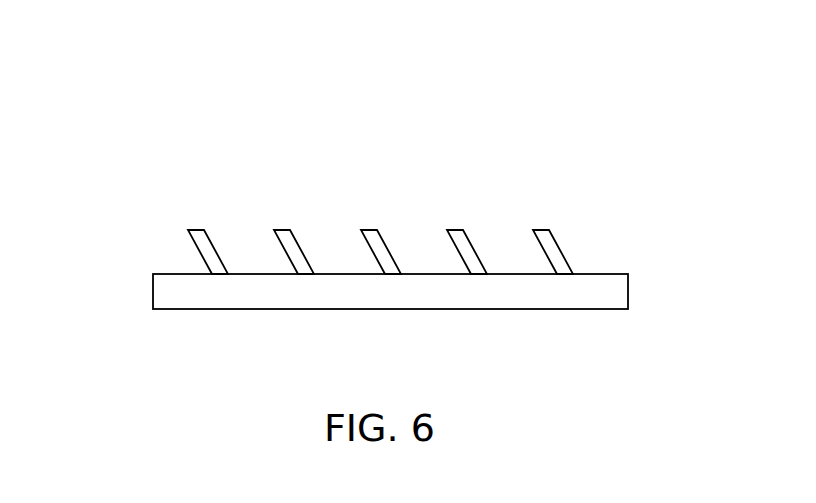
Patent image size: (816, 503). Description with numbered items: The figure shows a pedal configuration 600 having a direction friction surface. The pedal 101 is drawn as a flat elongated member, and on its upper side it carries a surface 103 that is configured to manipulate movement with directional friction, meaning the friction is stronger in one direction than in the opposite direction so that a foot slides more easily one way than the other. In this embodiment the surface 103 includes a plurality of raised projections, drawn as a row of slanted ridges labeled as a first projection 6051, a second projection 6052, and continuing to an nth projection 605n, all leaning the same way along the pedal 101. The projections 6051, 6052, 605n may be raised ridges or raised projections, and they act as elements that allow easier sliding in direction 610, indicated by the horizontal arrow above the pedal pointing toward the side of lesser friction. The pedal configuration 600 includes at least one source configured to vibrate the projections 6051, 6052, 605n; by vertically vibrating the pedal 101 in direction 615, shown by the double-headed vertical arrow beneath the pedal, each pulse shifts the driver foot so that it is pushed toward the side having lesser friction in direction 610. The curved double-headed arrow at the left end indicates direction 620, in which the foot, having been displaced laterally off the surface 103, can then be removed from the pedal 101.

The pedal configuration 600 is at (92, 104).
The pedal 101 is at (628, 292).
The surface 103 is at (558, 247).
The projection 6051 is at (198, 230).
The projection 6052 is at (285, 230).
The projection 605n is at (455, 230).
The direction 610 is at (397, 162).
The direction 615 is at (391, 366).
The direction 620 is at (158, 214).